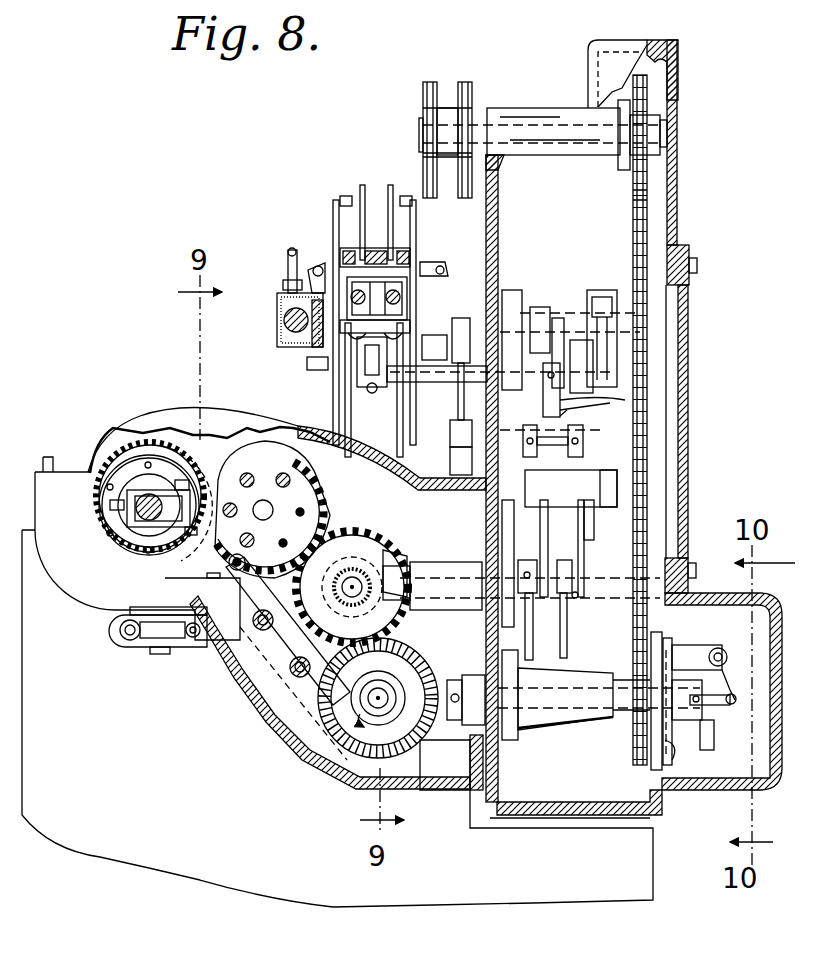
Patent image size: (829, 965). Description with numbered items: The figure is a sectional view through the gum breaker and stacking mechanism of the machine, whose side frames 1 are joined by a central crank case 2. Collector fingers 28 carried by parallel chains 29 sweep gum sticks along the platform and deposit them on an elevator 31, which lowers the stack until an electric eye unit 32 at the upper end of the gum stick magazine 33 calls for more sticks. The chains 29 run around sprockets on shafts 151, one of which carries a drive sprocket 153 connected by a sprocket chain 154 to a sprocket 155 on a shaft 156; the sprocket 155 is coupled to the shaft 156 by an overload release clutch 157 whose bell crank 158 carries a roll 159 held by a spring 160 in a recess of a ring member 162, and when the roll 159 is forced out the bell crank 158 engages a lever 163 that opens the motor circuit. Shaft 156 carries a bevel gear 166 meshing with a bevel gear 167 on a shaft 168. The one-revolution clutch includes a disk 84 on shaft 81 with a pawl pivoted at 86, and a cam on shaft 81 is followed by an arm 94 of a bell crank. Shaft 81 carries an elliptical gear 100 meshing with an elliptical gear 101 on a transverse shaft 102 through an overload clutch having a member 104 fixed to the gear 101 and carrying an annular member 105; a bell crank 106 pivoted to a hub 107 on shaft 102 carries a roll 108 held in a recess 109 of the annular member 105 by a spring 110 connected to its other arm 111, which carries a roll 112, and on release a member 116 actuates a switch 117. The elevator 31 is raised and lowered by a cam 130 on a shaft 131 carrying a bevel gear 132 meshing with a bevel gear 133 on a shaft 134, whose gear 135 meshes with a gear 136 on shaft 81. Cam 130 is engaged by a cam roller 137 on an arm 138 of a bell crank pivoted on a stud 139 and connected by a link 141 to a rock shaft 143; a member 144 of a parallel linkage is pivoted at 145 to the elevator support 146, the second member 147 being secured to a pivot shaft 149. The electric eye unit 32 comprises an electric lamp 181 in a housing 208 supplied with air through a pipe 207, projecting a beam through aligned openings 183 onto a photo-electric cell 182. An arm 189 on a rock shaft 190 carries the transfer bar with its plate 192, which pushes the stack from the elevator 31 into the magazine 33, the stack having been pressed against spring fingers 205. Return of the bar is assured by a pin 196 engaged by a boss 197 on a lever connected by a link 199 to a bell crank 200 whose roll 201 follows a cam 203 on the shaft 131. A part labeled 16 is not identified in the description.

The side frames 1 is at (628, 893).
The crank case 2 is at (237, 683).
The rod 16 is at (375, 245).
The collector fingers 28 is at (360, 195).
The collector chains 29 is at (470, 82).
The elevator 31 is at (422, 362).
The electric eye unit 32 is at (272, 320).
The gum stick magazine 33 is at (410, 437).
The shaft 81 is at (263, 498).
The disk 84 is at (303, 474).
The pawl pivot 86 is at (236, 553).
The bell crank arm 94 is at (297, 655).
The elliptical gear 100 is at (228, 475).
The second elliptical gear 101 is at (118, 445).
The transverse shaft 102 is at (167, 476).
The clutch member 104 is at (110, 547).
The annular member 105 is at (165, 530).
The bell crank 106 is at (190, 472).
The hub 107 is at (150, 540).
The roll 108 is at (172, 580).
The recess 109 is at (218, 462).
The spring 110 is at (146, 472).
The bell crank arm 111 is at (110, 478).
The roll 112 is at (120, 507).
The switch actuating member 116 is at (157, 632).
The switch 117 is at (117, 640).
The cam 130 is at (545, 615).
The cam shaft 131 is at (582, 590).
The bevel gear 132 is at (388, 554).
The bevel gear 133 is at (373, 543).
The shaft 134 is at (353, 585).
The gear 135 is at (445, 612).
The gear 136 is at (327, 498).
The cam roller 137 is at (540, 553).
The bell crank arm 138 is at (555, 535).
The stud 139 is at (570, 523).
The link 141 is at (557, 335).
The rock shaft 143 is at (565, 320).
The parallel linkage member 144 is at (495, 312).
The pivot 145 is at (545, 390).
The elevator support 146 is at (450, 430).
The second parallel linkage member 147 is at (458, 489).
The pivot shaft 149 is at (542, 427).
The sprocket shafts 151 is at (487, 108).
The drive sprocket 153 is at (650, 100).
The sprocket chain 154 is at (633, 200).
The sprocket 155 is at (630, 746).
The shaft 156 is at (574, 732).
The overload release clutch 157 is at (657, 632).
The bell crank 158 is at (727, 657).
The roll 159 is at (670, 642).
The spring 160 is at (712, 718).
The ring member 162 is at (673, 748).
The lever 163 is at (737, 694).
The bevel gear 166 is at (445, 680).
The bevel gear 167 is at (400, 672).
The shaft 168 is at (380, 697).
The electric lamp 181 is at (283, 328).
The photo-electric cell 182 is at (452, 380).
The openings 183 is at (307, 362).
The arm 189 is at (372, 393).
The rock shaft 190 is at (450, 455).
The plate 192 is at (375, 293).
The pin 196 is at (567, 410).
The boss 197 is at (610, 403).
The link 199 is at (615, 400).
The bell crank 200 is at (620, 520).
The roll 201 is at (577, 603).
The cam 203 is at (565, 640).
The spring fingers 205 is at (338, 220).
The pipe 207 is at (291, 262).
The housing 208 is at (283, 295).